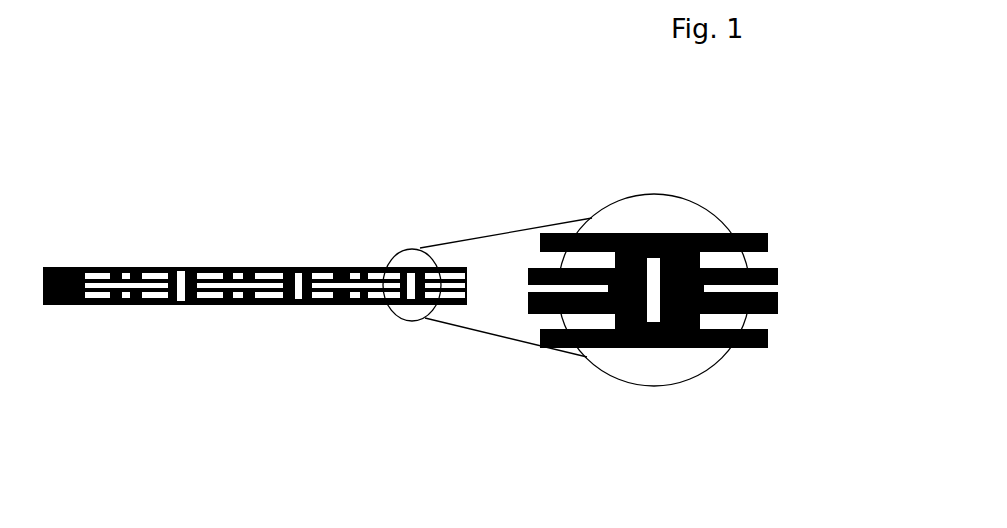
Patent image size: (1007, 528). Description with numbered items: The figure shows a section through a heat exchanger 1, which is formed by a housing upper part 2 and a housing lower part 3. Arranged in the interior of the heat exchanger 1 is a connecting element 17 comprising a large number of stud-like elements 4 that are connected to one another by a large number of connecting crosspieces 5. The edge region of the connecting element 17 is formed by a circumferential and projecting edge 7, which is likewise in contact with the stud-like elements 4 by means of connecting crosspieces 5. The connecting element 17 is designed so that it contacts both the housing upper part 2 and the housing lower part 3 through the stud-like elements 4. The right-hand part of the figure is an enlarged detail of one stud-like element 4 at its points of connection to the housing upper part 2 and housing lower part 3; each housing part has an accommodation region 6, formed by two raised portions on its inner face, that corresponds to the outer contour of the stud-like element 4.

The heat exchanger 1 is at (71, 246).
The housing upper part 2 is at (157, 267).
The housing lower part 3 is at (88, 305).
The stud-like element 4 is at (200, 267).
The connecting crosspiece 5 is at (212, 305).
The accommodation region 6 is at (612, 233).
The edge 7 is at (43, 305).
The connecting element 17 is at (328, 305).